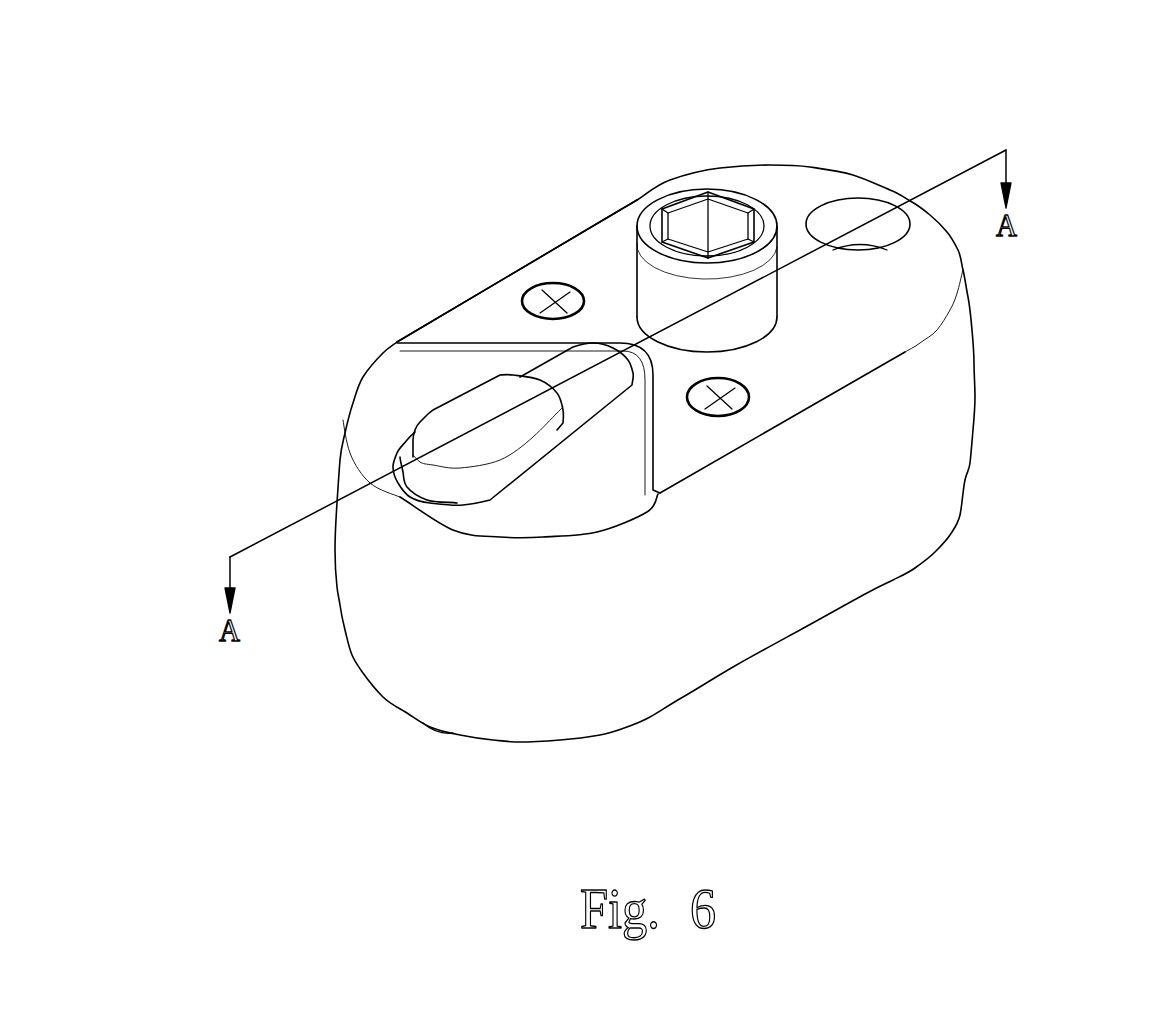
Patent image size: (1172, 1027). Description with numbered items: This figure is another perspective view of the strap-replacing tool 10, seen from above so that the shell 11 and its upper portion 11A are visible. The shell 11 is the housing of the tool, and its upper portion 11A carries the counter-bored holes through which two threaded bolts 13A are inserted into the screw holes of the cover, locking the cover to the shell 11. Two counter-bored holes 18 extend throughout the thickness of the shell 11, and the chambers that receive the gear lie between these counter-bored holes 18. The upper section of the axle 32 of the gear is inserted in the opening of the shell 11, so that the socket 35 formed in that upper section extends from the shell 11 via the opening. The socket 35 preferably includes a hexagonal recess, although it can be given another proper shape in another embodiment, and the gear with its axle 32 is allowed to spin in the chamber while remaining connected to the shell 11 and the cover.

The strap-replacing tool 10 is at (431, 298).
The shell 11 is at (950, 438).
The upper portion 11A is at (585, 250).
The threaded bolts 13A is at (551, 283).
The counter-bored holes 18 is at (868, 207).
The axle 32 is at (773, 232).
The socket 35 is at (688, 220).